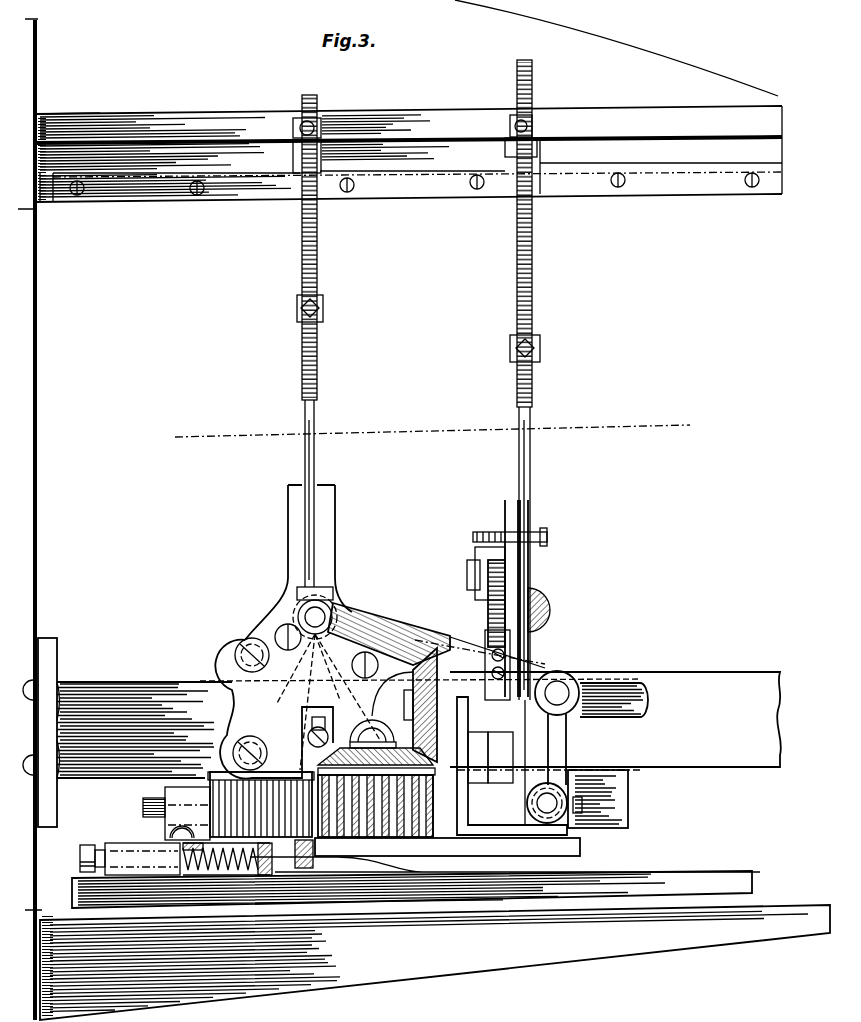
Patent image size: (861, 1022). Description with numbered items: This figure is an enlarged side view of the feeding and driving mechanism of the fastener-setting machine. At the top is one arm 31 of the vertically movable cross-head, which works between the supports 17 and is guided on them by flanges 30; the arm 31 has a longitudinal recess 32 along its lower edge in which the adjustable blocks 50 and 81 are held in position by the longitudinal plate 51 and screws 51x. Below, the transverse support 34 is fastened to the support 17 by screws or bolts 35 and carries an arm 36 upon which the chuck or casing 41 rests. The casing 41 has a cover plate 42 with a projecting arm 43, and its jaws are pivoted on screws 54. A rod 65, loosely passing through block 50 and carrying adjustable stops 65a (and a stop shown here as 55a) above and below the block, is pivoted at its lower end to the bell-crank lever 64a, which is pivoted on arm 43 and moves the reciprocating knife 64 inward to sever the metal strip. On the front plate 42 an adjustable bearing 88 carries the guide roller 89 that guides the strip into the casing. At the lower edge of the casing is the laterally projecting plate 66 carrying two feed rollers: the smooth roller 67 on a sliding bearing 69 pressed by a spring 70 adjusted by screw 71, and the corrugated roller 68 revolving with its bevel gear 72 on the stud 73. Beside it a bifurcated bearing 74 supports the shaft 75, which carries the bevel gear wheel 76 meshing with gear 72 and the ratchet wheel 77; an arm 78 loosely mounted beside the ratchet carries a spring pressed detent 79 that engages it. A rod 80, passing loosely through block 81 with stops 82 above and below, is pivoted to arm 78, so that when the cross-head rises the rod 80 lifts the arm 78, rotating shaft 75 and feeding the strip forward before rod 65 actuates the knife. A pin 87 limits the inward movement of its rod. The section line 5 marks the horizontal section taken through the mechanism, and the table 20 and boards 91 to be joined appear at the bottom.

The support 17 is at (27, 327).
The plate or table 20 is at (478, 936).
The flange 30 is at (38, 105).
The arm 31 is at (204, 113).
The longitudinal recess 32 is at (661, 150).
The transverse support 34 is at (47, 651).
The screw or bolt 35 is at (37, 691).
The arm 36 is at (154, 689).
The chuck or casing 41 is at (312, 627).
The cover plate 42 is at (420, 709).
The projecting arm 43 is at (446, 645).
The block 50 is at (296, 194).
The longitudinal plate 51 is at (436, 194).
The screw 51x is at (80, 193).
The screw 54 is at (248, 645).
The nut 55a is at (297, 306).
The section line 5 is at (433, 432).
The reciprocating knife 64 is at (622, 803).
The bell-crank lever 64a is at (529, 665).
The rod 65 is at (318, 397).
The stop 65a is at (312, 122).
The laterally projecting plate 66 is at (582, 850).
The feed roller 67 is at (261, 804).
The feed roller 68 is at (380, 835).
The sliding bearing 69 is at (278, 851).
The spring 70 is at (183, 850).
The adjusting screw 71 is at (87, 845).
The bevel gear 72 is at (377, 706).
The shaft or stud 73 is at (377, 696).
The bifurcated bearing 74 is at (489, 830).
The shaft 75 is at (606, 690).
The bevel gear wheel 76 is at (496, 658).
The ratchet wheel 77 is at (500, 757).
The arm 78 is at (531, 645).
The spring pressed detent 79 is at (487, 735).
The rod 80 is at (533, 393).
The block 81 is at (506, 197).
The stop 82 is at (509, 125).
The pin 87 is at (168, 806).
The adjustable bearing 88 is at (312, 723).
The guide roller 89 is at (310, 745).
The board 91 is at (412, 889).